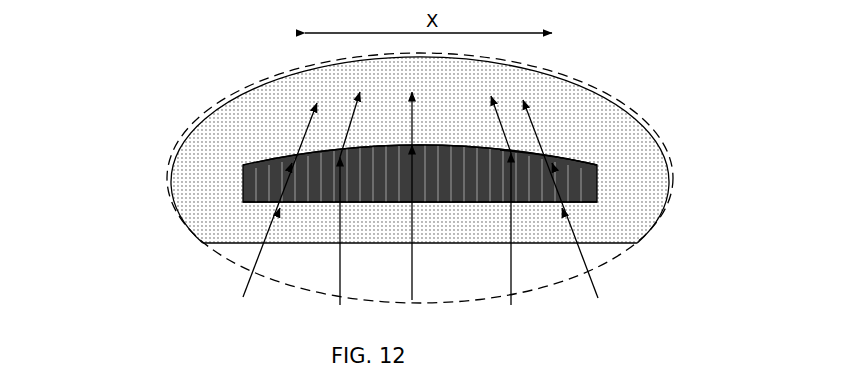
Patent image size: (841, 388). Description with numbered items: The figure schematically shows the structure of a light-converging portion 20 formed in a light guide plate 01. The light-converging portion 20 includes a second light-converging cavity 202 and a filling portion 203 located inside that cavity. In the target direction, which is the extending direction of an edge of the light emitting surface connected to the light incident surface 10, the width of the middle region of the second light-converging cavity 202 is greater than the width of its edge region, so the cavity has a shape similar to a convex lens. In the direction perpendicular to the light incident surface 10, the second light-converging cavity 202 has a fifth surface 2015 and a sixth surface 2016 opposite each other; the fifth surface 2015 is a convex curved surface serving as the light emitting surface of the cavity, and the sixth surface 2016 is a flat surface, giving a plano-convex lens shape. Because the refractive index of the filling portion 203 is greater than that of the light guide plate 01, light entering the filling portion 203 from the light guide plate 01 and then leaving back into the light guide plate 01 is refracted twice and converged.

The light guide plate 01 is at (270, 103).
The light incident surface 10 is at (237, 244).
The light-converging portion 20 is at (323, 173).
The second light-converging cavity 202 is at (302, 156).
The filling portion 203 is at (267, 181).
The fifth surface 2015 is at (572, 160).
The sixth surface 2016 is at (569, 203).